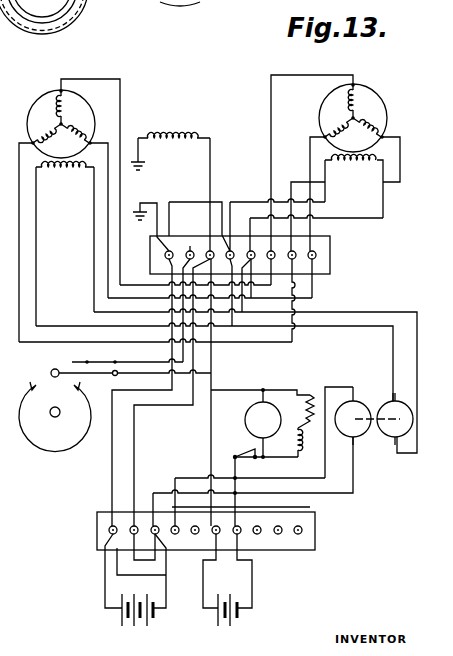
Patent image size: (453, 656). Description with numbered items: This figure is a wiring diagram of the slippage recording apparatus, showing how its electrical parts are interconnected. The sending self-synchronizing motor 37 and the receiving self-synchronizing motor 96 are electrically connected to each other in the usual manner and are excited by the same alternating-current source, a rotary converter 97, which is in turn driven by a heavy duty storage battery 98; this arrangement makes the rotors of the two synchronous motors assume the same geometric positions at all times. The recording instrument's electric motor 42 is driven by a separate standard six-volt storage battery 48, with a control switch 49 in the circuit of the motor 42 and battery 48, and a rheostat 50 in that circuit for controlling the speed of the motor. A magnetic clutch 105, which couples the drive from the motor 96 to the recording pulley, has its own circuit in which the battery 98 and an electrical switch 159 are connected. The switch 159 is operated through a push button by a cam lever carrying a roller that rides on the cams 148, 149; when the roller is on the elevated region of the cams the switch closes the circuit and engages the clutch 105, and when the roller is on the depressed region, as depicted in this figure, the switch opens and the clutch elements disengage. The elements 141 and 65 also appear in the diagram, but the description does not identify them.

The self-synchronizing motor 37 is at (34, 103).
The magnetic clutch 105 is at (178, 134).
The self-synchronizing motor 96 is at (364, 92).
The electrical switch 159 is at (70, 362).
The distributor 141 is at (56, 417).
The cam 148 is at (85, 476).
The cam 149 is at (64, 444).
The conductor 65 is at (6, 469).
The electric motor 42 is at (250, 424).
The rheostat 50 is at (303, 403).
The control switch 49 is at (245, 460).
The rotary converter 97 is at (377, 432).
The heavy duty storage battery 98 is at (120, 618).
The storage battery 48 is at (258, 618).